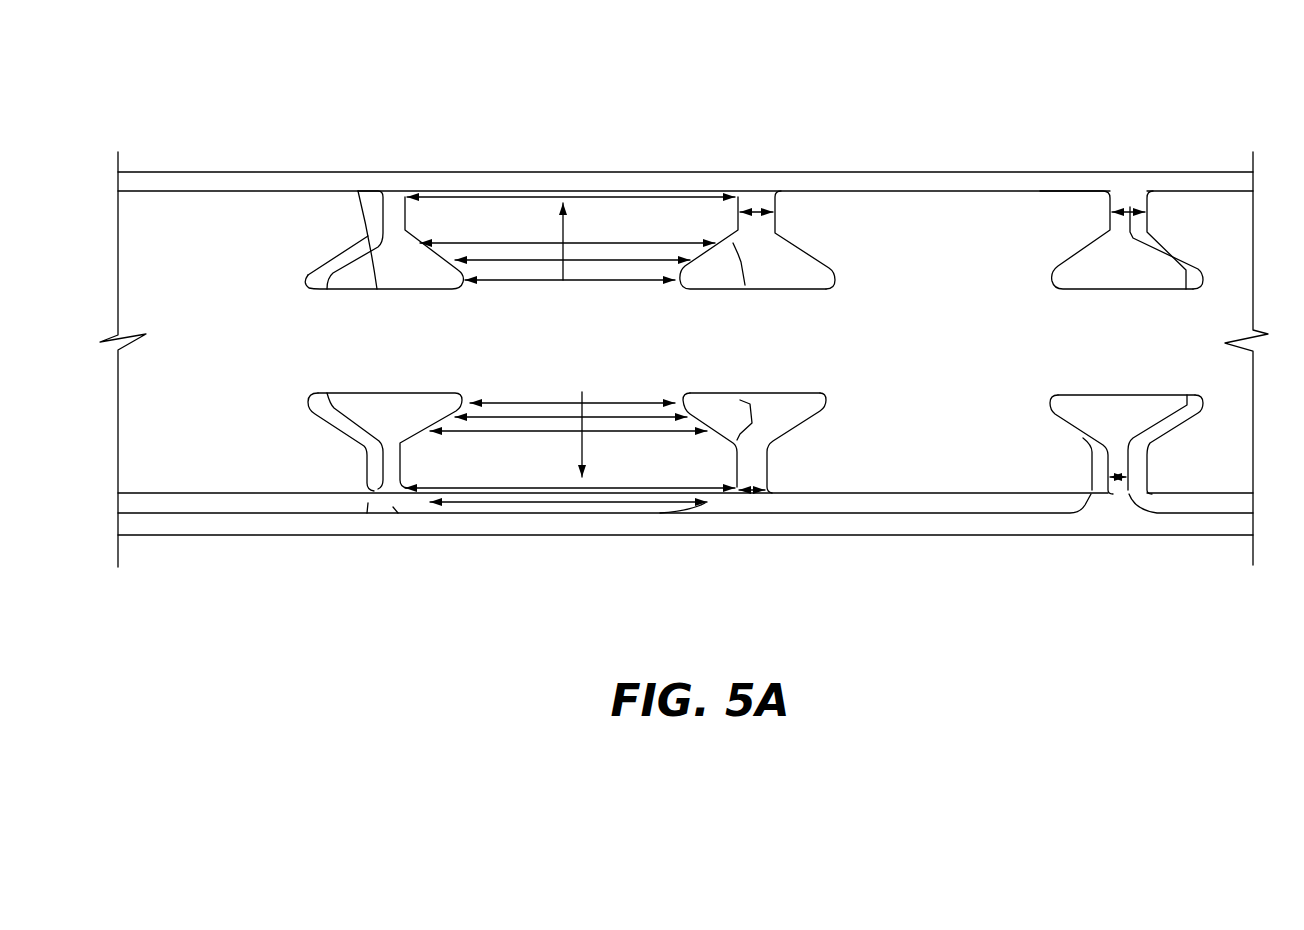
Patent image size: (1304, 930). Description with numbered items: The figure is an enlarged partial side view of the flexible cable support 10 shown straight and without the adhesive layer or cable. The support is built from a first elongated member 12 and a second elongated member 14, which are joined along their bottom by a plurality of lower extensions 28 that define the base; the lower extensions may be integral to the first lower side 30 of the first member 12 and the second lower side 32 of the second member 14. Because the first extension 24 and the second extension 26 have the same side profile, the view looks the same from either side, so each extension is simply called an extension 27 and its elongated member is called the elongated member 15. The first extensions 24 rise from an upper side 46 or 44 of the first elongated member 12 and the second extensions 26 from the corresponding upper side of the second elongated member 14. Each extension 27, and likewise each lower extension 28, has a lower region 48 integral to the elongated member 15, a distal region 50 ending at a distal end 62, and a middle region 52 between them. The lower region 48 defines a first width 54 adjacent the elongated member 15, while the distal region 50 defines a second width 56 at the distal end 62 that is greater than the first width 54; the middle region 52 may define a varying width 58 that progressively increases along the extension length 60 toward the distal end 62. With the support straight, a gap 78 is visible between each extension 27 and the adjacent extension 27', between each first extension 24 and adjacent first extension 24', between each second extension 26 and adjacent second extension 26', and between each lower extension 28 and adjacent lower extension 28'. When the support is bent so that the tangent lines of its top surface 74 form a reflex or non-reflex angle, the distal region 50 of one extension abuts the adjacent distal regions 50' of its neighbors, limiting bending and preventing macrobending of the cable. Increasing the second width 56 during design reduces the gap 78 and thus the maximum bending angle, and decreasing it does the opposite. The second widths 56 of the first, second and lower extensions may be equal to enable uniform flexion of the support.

The flexible cable support 10 is at (917, 93).
The first elongated member 12 is at (198, 480).
The second elongated member 14 is at (278, 360).
The elongated member 15 is at (880, 350).
The first extension 24 is at (543, 137).
The second extension 26 is at (543, 137).
The adjacent first extension 24' is at (571, 140).
The adjacent second extension 26' is at (571, 140).
The extension 27 is at (515, 160).
The adjacent extension 27' is at (584, 154).
The lower extension 28 is at (685, 538).
The adjacent lower extension 28' is at (595, 551).
The connector element 30 is at (577, 463).
The second lower side 32 is at (395, 388).
The upper side 44 is at (583, 272).
The upper side 46 is at (355, 200).
The lower region 48 is at (453, 278).
The distal region 50 is at (756, 339).
The adjacent distal region 50' is at (708, 372).
The middle region 52 is at (755, 415).
The first width 54 is at (490, 279).
The second width 56 is at (577, 228).
The varying width 58 is at (690, 267).
The extension length 60 is at (582, 200).
The distal end 62 is at (480, 190).
The top surface 74 is at (205, 190).
The gap 78 is at (757, 205).